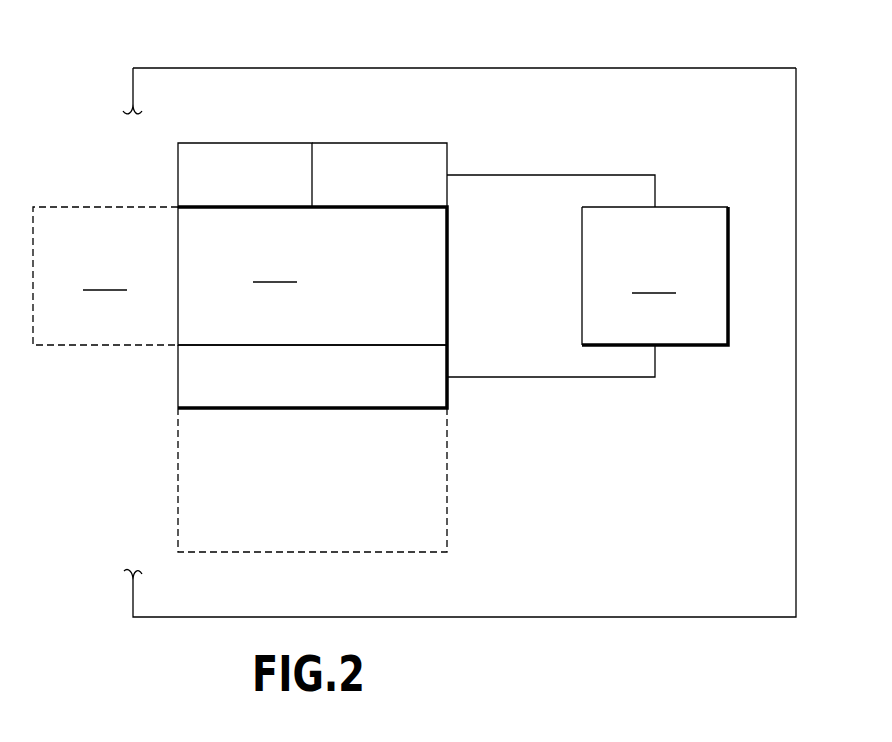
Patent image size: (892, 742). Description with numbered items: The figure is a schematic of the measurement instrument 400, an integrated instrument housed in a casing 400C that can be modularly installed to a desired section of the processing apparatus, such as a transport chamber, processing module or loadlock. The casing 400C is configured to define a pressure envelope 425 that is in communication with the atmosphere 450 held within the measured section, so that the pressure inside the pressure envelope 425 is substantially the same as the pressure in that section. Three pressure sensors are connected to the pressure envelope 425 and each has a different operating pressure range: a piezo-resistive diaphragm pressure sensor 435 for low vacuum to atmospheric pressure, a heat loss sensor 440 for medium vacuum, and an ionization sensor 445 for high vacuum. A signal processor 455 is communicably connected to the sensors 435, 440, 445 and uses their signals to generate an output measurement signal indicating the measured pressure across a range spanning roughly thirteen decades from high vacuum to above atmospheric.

The measurement instrument 400 is at (459, 317).
The casing 400C is at (327, 68).
The pressure envelope 425 is at (312, 276).
The pressure sensor 435 is at (305, 345).
The heat loss sensor 440 is at (253, 143).
The ionization sensor 445 is at (367, 143).
The atmosphere 450 is at (105, 276).
The signal processor 455 is at (587, 276).